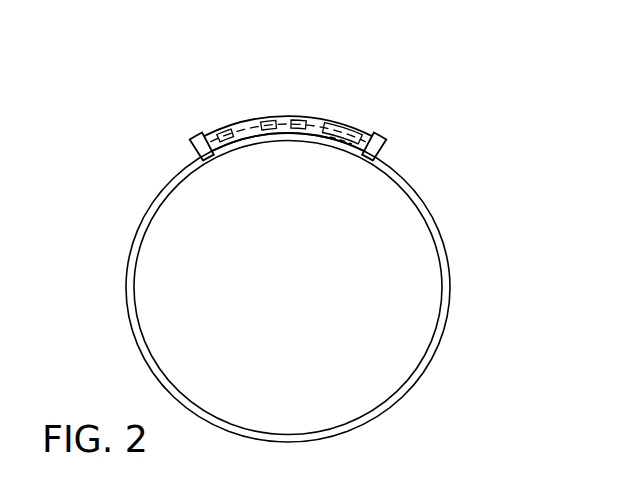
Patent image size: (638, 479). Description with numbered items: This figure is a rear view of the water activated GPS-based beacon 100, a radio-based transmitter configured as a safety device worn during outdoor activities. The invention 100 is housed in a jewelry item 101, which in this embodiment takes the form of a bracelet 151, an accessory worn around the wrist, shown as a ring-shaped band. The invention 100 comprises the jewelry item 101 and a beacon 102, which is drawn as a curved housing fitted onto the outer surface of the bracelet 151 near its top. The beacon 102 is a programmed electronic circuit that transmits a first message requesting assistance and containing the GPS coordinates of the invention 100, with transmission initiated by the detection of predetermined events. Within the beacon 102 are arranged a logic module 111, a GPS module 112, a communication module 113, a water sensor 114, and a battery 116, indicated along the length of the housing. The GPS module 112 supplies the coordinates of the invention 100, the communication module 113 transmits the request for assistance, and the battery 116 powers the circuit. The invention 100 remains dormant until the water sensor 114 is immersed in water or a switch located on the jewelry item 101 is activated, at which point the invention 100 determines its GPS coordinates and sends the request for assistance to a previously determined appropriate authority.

The water activated GPS-based beacon 100 is at (170, 118).
The jewelry item 101 is at (447, 273).
The beacon 102 is at (277, 117).
The logic module 111 is at (223, 128).
The GPS module 112 is at (302, 117).
The communication module 113 is at (272, 117).
The water sensor 114 is at (360, 128).
The battery 116 is at (342, 146).
The bracelet 151 is at (160, 152).